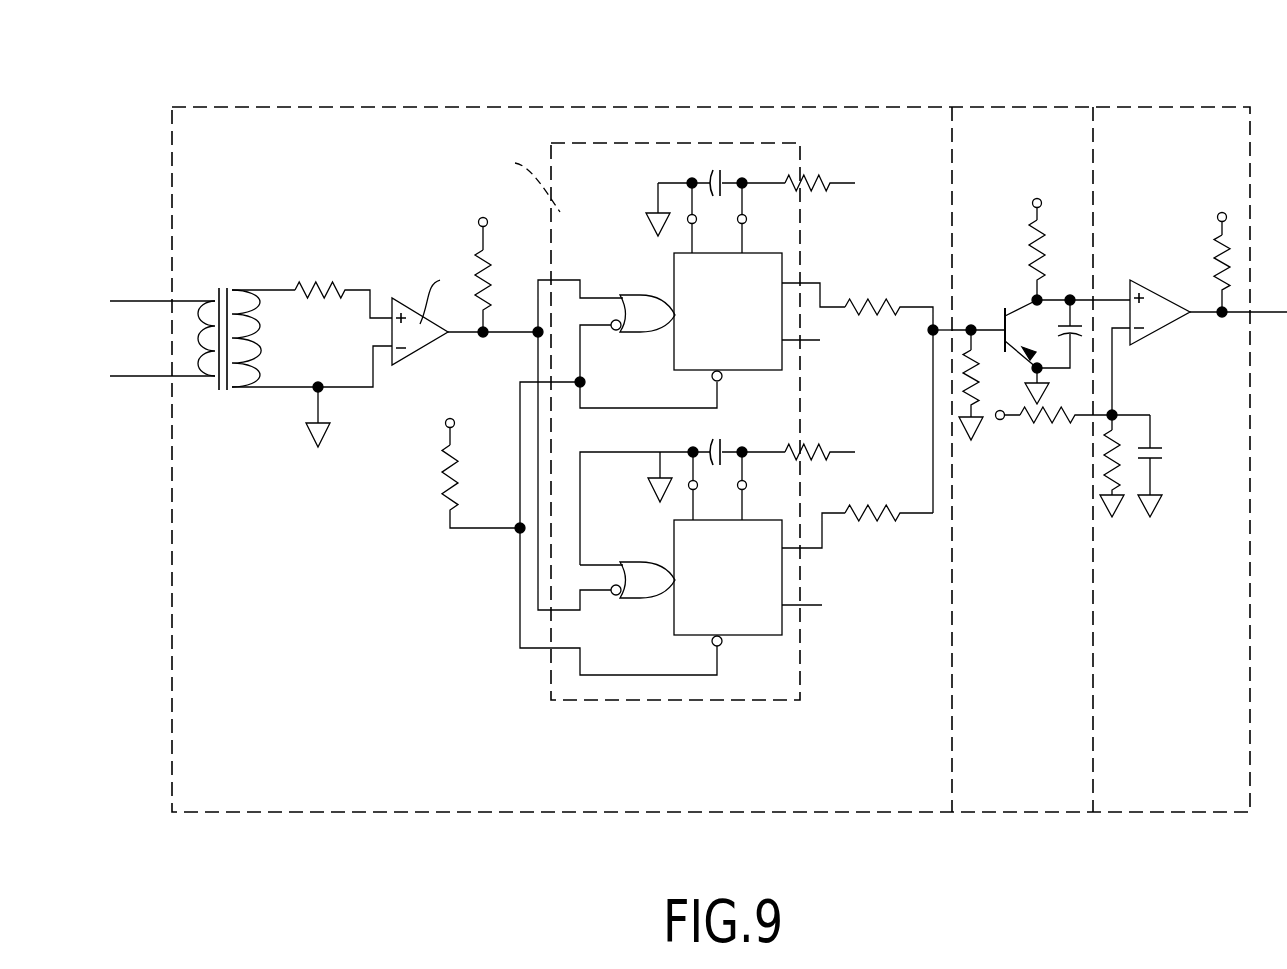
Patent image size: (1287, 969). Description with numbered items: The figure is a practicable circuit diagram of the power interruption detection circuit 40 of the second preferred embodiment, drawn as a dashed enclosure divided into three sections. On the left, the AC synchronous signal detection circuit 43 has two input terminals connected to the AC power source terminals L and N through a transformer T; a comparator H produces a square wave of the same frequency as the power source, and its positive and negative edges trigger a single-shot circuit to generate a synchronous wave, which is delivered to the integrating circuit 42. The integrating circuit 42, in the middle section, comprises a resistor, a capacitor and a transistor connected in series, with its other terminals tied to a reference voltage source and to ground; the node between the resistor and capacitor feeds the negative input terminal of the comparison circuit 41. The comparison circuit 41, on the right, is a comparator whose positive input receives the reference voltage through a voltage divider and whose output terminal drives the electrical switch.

The power interruption detection circuit 40 is at (718, 106).
The comparison circuit 41 is at (1200, 800).
The integrating circuit 42 is at (1035, 800).
The AC synchronous signal detection circuit 43 is at (480, 802).